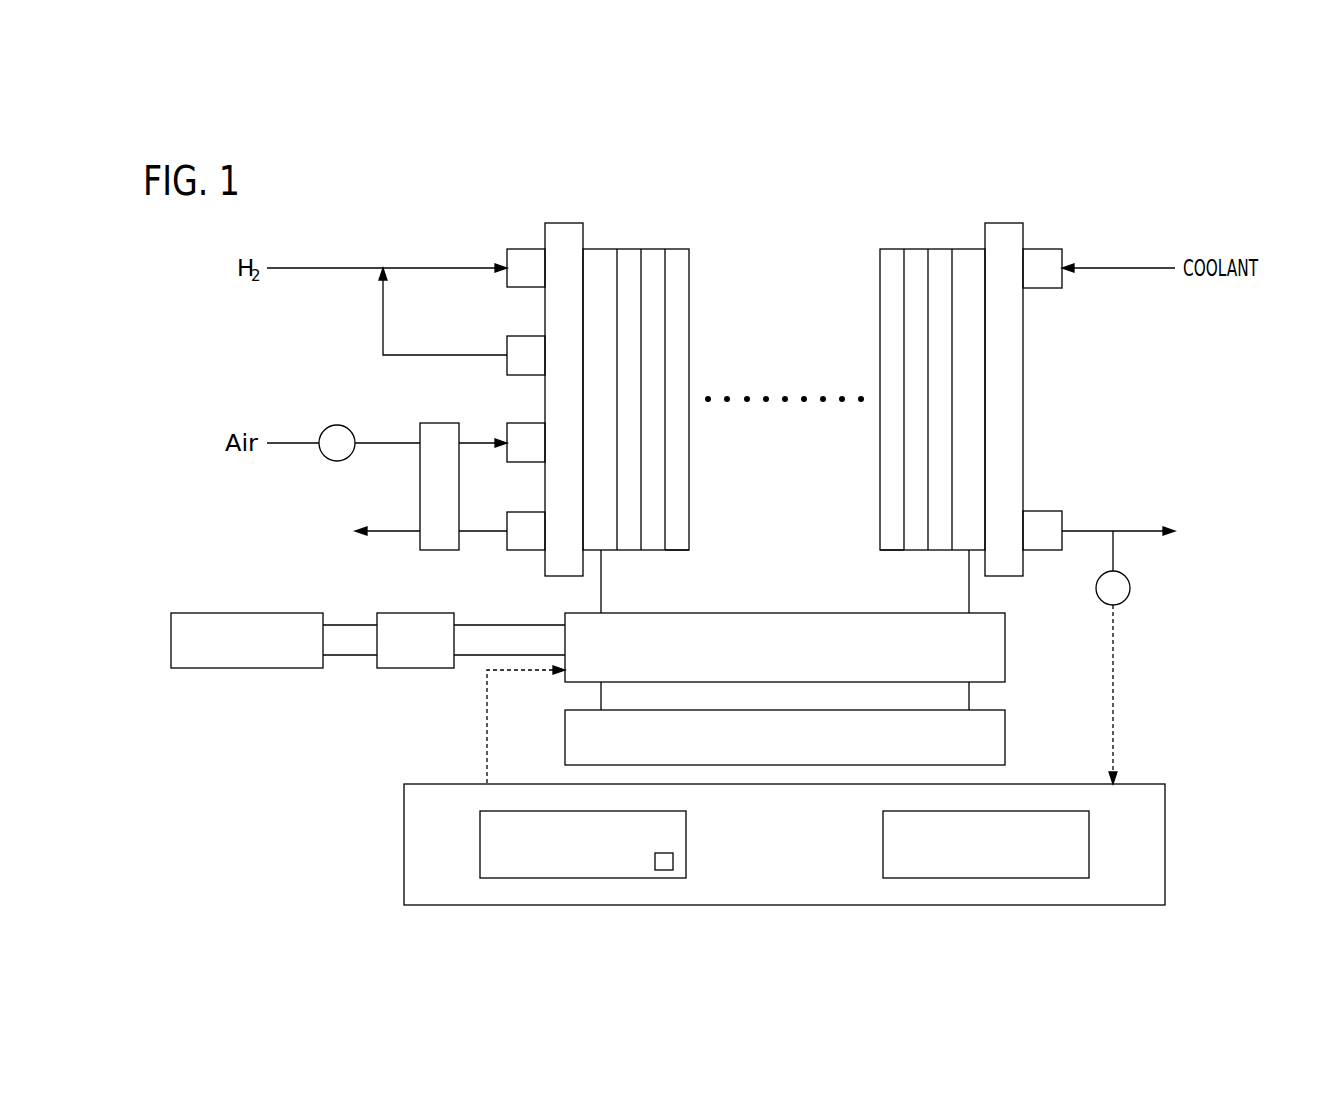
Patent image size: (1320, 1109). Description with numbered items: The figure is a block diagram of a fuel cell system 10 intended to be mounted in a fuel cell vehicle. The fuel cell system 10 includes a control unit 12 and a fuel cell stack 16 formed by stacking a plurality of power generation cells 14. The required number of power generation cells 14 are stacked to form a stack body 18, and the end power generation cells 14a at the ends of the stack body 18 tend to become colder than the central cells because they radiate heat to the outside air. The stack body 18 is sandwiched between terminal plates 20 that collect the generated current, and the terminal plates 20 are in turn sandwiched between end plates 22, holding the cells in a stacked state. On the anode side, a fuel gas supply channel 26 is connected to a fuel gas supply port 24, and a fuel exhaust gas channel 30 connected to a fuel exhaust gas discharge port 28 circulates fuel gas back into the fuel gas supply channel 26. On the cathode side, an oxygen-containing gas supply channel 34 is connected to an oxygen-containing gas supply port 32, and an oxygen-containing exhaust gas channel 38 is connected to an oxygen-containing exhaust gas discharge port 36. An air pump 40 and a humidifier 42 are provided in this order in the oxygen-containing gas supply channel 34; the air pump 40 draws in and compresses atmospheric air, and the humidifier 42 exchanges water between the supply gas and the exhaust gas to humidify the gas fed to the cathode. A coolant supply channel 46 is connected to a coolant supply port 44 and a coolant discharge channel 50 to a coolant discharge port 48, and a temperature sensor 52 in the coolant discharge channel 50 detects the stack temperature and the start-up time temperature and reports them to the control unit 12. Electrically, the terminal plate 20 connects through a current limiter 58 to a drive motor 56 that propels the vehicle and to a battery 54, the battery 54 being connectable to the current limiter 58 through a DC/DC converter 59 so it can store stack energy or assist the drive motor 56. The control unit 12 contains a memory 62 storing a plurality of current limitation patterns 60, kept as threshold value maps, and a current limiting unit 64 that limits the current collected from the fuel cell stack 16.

The fuel cell system 10 is at (1148, 165).
The control unit 12 is at (1165, 800).
The power generation cell 14 is at (652, 258).
The end power generation cell 14a is at (630, 540).
The fuel cell stack 16 is at (982, 179).
The stack body 18 is at (822, 236).
The terminal plate 20 is at (600, 257).
The end plate 22 is at (564, 222).
The fuel gas supply port 24 is at (525, 249).
The fuel gas supply channel 26 is at (408, 268).
The fuel exhaust gas discharge port 28 is at (525, 336).
The fuel exhaust gas channel 30 is at (443, 355).
The oxygen-containing gas supply port 32 is at (525, 423).
The oxygen-containing gas supply channel 34 is at (481, 443).
The oxygen-containing exhaust gas discharge port 36 is at (525, 512).
The oxygen-containing exhaust gas channel 38 is at (481, 531).
The air pump 40 is at (337, 425).
The humidifier 42 is at (439, 423).
The coolant supply port 44 is at (1051, 249).
The coolant supply channel 46 is at (1120, 268).
The coolant discharge port 48 is at (1051, 511).
The coolant discharge channel 50 is at (1090, 531).
The temperature sensor 52 is at (1128, 596).
The battery 54 is at (225, 613).
The drive motor 56 is at (1005, 722).
The current limiter 58 is at (772, 613).
The DC/DC converter 59 is at (400, 613).
The current limitation pattern 60 is at (673, 861).
The memory 62 is at (686, 830).
The current limiting unit 64 is at (1089, 830).